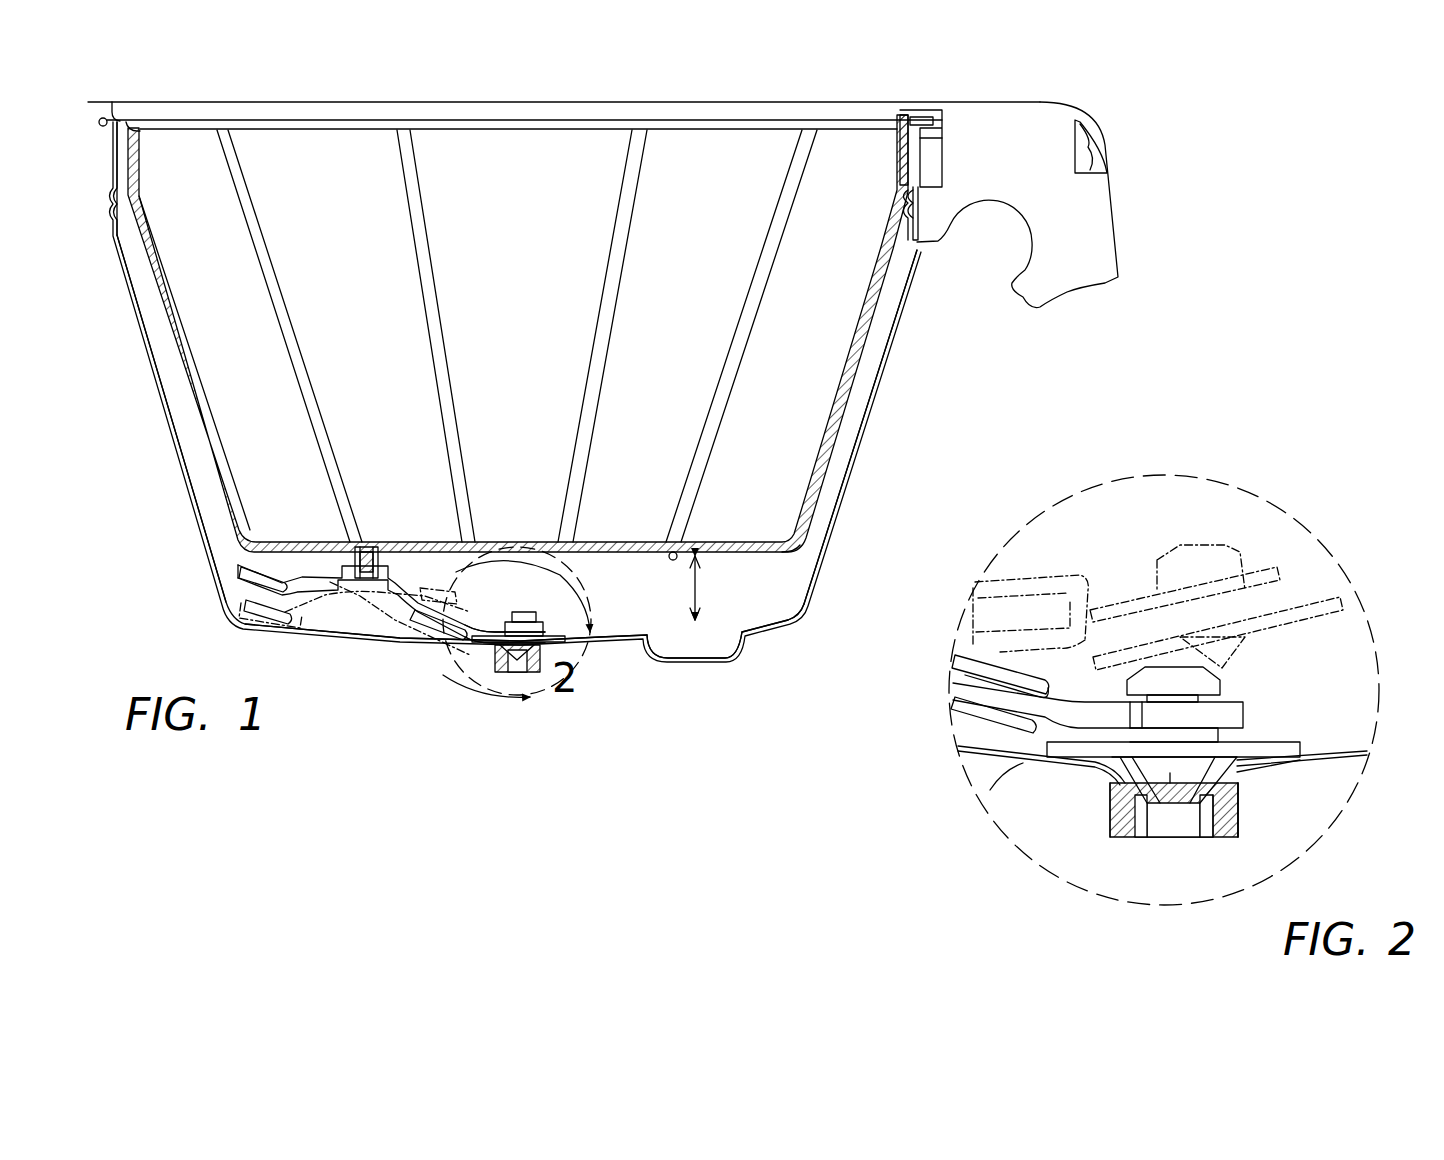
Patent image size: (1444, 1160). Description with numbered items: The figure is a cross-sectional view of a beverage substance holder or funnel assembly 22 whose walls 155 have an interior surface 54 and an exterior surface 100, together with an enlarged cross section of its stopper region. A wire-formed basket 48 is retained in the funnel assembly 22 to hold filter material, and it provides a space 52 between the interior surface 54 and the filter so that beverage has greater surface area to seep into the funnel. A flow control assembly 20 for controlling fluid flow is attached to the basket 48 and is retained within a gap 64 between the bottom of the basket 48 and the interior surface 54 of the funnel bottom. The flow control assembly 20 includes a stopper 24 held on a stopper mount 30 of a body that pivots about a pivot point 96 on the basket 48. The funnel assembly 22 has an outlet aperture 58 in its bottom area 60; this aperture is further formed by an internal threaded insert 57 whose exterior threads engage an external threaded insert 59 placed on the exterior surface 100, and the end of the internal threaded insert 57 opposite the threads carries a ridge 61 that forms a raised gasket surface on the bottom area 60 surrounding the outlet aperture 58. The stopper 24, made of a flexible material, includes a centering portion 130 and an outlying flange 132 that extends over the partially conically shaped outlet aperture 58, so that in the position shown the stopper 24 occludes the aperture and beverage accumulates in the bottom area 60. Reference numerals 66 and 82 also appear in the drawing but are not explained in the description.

In FIG. 1, the flow control assembly 20 is at (429, 572).
In FIG. 1, the funnel assembly 22 is at (148, 534).
In FIG. 1, the stopper 24 is at (596, 605).
In FIG. 2, the stopper 24 is at (975, 741).
In FIG. 1, the stopper mount 30 is at (530, 622).
In FIG. 2, the stopper mount 30 is at (1232, 718).
In FIG. 1, the basket 48 is at (840, 402).
In FIG. 1, the space 52 is at (836, 476).
In FIG. 1, the interior surface 54 is at (832, 530).
In FIG. 2, the internal threaded insert 57 is at (1213, 790).
In FIG. 1, the outlet aperture 58 is at (517, 672).
In FIG. 2, the outlet aperture 58 is at (1173, 837).
In FIG. 2, the external threaded insert 59 is at (1240, 823).
In FIG. 1, the bottom area 60 is at (626, 644).
In FIG. 2, the bottom area 60 is at (992, 788).
In FIG. 2, the ridge 61 is at (1237, 768).
In FIG. 1, the gap 64 is at (738, 562).
In FIG. 1, the bottom wall portion 66 is at (736, 560).
In FIG. 1, the liner side wall 82 is at (192, 272).
In FIG. 1, the pivot point 96 is at (366, 548).
In FIG. 1, the exterior surface 100 is at (787, 622).
In FIG. 2, the centering portion 130 is at (1170, 775).
In FIG. 2, the outlying flange 132 is at (1268, 755).
In FIG. 1, the walls 155 is at (165, 412).